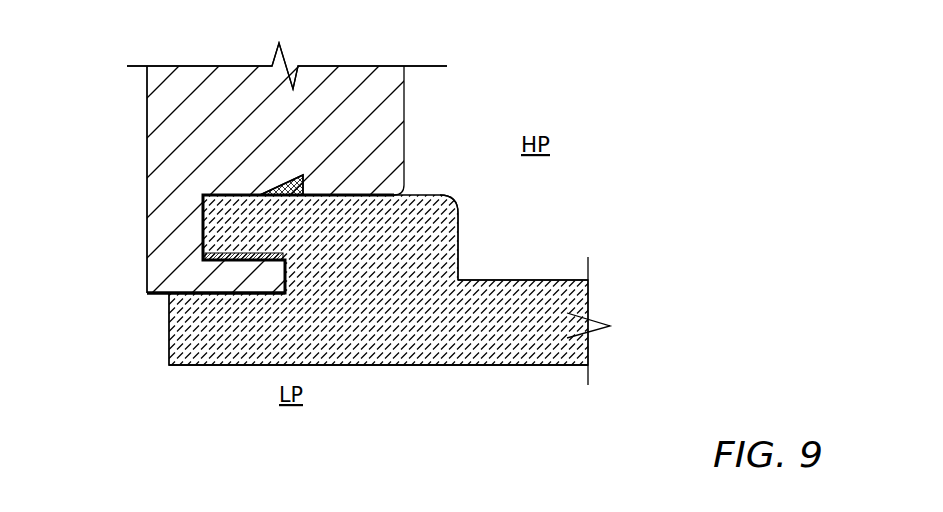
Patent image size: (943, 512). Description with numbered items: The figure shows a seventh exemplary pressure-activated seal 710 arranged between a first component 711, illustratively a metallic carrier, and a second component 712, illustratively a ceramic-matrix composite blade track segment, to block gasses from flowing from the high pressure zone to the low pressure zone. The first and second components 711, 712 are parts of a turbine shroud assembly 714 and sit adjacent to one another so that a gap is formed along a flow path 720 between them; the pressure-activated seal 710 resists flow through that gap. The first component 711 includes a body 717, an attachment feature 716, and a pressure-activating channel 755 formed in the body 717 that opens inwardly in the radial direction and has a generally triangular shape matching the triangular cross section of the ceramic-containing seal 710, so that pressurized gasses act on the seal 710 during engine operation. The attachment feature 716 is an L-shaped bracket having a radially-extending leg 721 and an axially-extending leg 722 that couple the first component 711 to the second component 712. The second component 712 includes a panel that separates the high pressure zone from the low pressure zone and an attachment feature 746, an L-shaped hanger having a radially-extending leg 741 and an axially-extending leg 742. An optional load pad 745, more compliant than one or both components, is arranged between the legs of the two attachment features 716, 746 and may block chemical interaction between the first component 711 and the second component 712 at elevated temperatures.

The pressure-activated seal 710 is at (308, 184).
The first component 711 is at (145, 134).
The second component 712 is at (400, 373).
The turbine shroud assembly 714 is at (513, 85).
The attachment feature 716 is at (147, 186).
The body 717 is at (357, 83).
The flow path 720 is at (405, 196).
The radially-extending leg 721 is at (147, 224).
The axially-extending leg 722 is at (218, 295).
The radially-extending leg 741 is at (423, 267).
The axially-extending leg 742 is at (380, 224).
The load pad 745 is at (252, 252).
The attachment feature 746 is at (463, 228).
The pressure-activating channel 755 is at (301, 176).